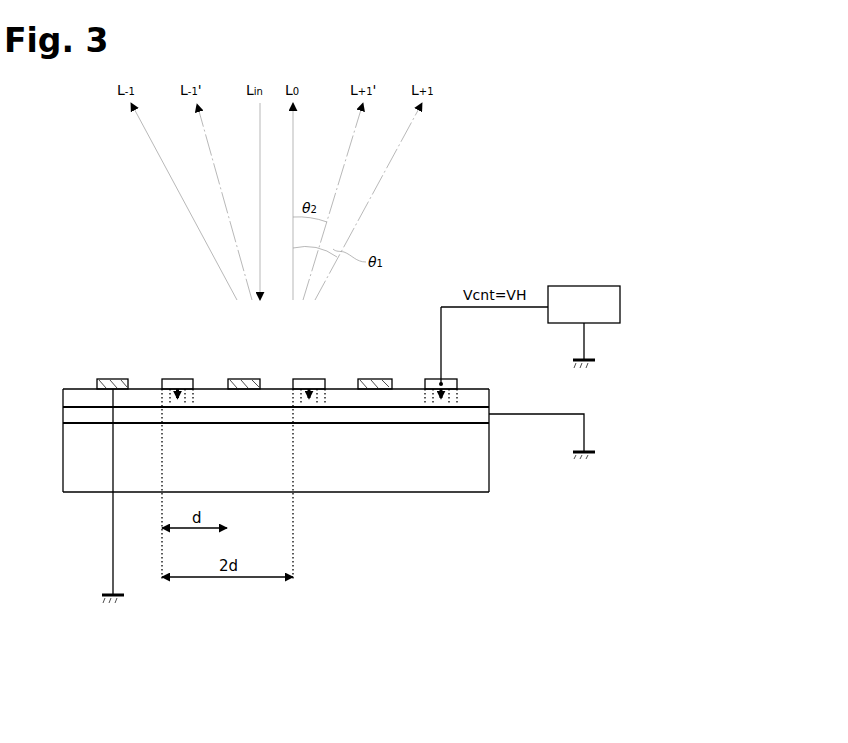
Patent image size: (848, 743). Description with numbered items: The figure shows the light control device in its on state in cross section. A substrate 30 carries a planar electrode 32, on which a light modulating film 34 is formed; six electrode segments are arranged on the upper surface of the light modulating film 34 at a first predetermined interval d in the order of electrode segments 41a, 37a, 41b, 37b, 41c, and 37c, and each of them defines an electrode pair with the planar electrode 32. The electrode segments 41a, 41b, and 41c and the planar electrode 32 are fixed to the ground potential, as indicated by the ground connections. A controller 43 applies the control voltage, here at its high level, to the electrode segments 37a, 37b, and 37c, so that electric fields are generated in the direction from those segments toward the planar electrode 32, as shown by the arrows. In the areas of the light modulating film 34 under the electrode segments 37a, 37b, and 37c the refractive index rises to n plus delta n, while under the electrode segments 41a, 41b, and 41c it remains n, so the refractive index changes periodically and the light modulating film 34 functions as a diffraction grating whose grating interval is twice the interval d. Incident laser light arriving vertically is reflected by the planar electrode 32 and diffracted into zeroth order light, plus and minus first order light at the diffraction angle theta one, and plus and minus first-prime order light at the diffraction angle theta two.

The substrate 30 is at (72, 461).
The planar electrode 32 is at (70, 416).
The light modulating film 34 is at (63, 389).
The electrode segment 37a is at (187, 378).
The electrode segment 37b is at (318, 378).
The electrode segment 37c is at (457, 378).
The electrode segment 41a is at (123, 378).
The electrode segment 41b is at (252, 378).
The electrode segment 41c is at (382, 378).
The controller 43 is at (588, 284).